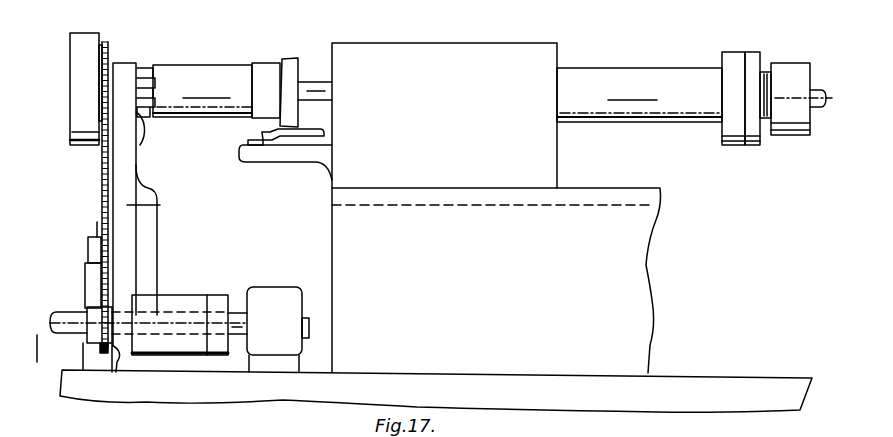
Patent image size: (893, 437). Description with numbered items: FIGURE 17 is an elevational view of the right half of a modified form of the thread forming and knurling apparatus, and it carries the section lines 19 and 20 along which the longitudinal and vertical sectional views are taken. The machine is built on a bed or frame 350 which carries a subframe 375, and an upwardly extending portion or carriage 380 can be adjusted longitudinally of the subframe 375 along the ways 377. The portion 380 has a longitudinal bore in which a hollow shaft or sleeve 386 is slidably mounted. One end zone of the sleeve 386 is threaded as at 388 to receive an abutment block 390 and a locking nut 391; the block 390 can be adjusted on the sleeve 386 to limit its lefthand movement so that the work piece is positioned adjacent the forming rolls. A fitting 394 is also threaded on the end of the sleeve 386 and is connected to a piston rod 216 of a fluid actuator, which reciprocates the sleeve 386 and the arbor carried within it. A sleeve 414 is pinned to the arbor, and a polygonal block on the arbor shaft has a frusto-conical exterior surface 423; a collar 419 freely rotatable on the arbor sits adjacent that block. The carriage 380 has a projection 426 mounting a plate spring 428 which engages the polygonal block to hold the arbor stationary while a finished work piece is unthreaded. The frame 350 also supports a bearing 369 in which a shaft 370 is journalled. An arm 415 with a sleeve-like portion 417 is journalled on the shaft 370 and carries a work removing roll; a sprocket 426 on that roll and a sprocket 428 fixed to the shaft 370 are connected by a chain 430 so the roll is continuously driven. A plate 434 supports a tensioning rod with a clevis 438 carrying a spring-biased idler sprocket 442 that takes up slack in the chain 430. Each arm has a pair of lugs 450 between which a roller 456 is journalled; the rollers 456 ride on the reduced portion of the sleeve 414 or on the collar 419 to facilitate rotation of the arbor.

The section line 19— 19 is at (88, 88).
The section line 20— 20 is at (195, 142).
The rod 216 is at (818, 90).
The frame or support 350 is at (732, 378).
The bearing 369 is at (281, 287).
The shaft 370 is at (78, 336).
The subframe 375 is at (652, 332).
The ways 377 is at (608, 204).
The upwardly extending portion 380 is at (510, 44).
The sleeve, hollow shaft or spindle 386 is at (622, 68).
The threaded end zone 388 is at (766, 122).
The abutment block 390 is at (727, 52).
The locking nut 391 is at (752, 52).
The fitting 394 is at (777, 63).
The sleeve 414 is at (238, 65).
The arm 415 is at (160, 205).
The sleeve-like portion 417 is at (167, 342).
The collar 419 is at (267, 63).
The exterior periphery or surface zone 423 is at (298, 57).
The projection / sprocket 426 is at (109, 46).
The plate spring / sprocket 428 is at (262, 132).
The chain 430 is at (101, 168).
The plate 434 is at (117, 364).
The clevis 438 is at (88, 240).
The idler sprocket 442 is at (97, 222).
The lugs or bosses 450 is at (142, 67).
The roller 456 is at (138, 130).